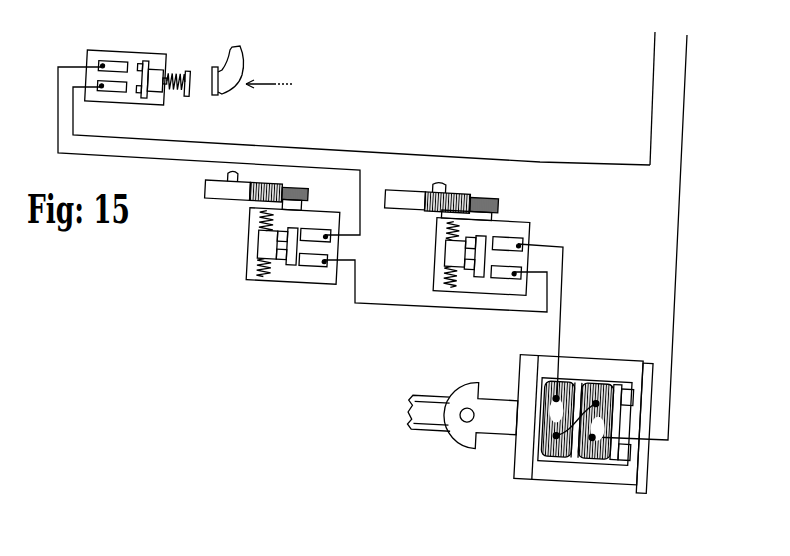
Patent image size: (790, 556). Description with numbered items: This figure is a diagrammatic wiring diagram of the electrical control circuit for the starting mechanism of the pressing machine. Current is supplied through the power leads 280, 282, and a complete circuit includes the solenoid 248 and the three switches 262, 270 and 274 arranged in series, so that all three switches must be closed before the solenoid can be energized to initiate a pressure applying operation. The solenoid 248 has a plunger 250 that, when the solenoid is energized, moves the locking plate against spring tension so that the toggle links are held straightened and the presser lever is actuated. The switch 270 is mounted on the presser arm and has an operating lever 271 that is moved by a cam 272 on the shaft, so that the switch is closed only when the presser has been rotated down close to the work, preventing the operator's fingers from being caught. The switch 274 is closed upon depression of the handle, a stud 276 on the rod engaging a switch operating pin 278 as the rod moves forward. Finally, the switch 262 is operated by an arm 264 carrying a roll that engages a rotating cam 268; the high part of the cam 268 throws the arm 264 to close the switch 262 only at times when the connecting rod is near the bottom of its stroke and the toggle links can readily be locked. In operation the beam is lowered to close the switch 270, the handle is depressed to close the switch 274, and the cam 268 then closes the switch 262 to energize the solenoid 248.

The solenoid 248 is at (563, 447).
The plunger 250 is at (500, 430).
The switch 262 is at (528, 232).
The arm 264 is at (500, 204).
The cam 268 is at (410, 212).
The switch 270 is at (305, 275).
The operating lever 271 is at (300, 188).
The cam 272 is at (232, 195).
The switch 274 is at (135, 54).
The stud 276 is at (225, 90).
The switch operating pin 278 is at (197, 92).
The power lead 280 is at (655, 52).
The power lead 282 is at (686, 70).